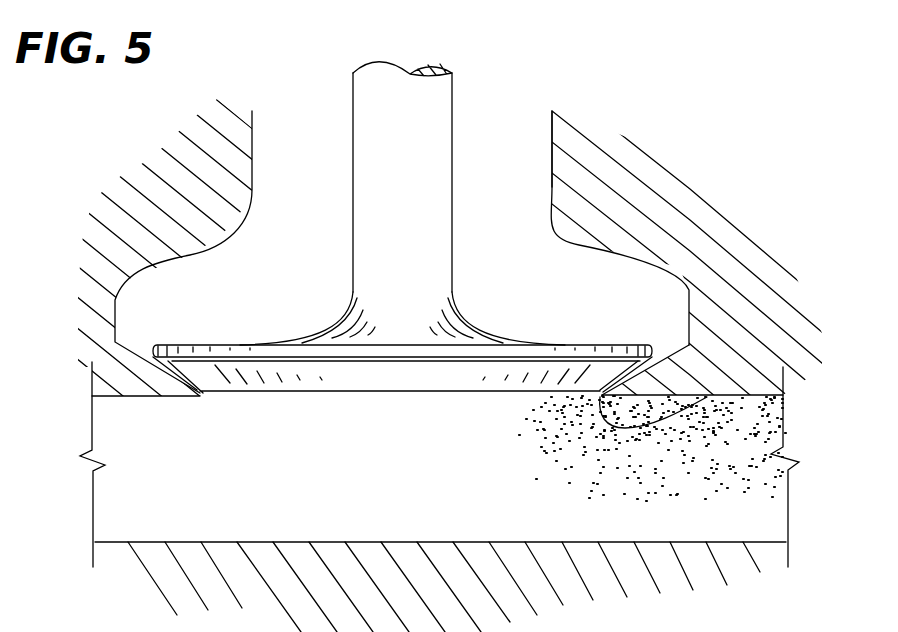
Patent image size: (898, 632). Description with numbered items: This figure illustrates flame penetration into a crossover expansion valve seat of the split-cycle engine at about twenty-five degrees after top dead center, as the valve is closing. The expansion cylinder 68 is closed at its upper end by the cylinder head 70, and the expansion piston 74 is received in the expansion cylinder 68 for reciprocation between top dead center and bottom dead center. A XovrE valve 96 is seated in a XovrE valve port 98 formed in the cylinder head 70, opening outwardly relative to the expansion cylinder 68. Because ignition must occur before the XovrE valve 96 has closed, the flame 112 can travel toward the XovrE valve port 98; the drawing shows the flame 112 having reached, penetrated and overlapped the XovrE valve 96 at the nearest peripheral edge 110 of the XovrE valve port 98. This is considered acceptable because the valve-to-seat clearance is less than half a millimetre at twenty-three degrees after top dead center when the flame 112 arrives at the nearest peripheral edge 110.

The expansion cylinder 68 is at (100, 524).
The cylinder head 70 is at (665, 187).
The expansion piston 74 is at (160, 592).
The XovrE valve 96 is at (430, 123).
The XovrE valve port 98 is at (518, 183).
The nearest peripheral edge 110 is at (707, 397).
The flame 112 is at (727, 422).